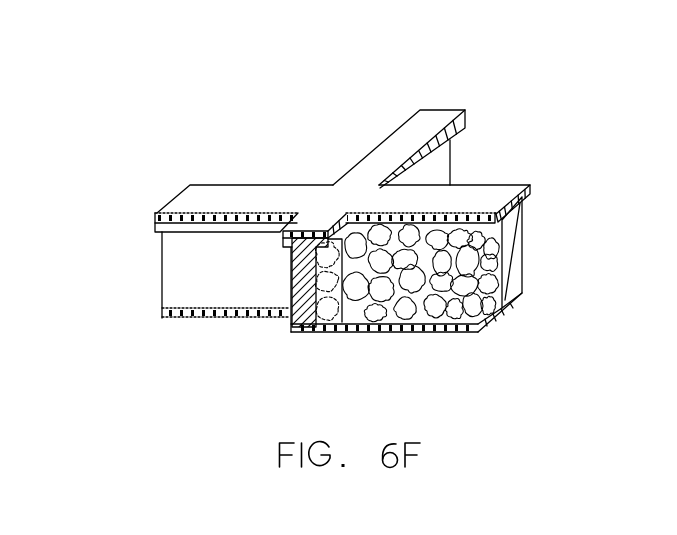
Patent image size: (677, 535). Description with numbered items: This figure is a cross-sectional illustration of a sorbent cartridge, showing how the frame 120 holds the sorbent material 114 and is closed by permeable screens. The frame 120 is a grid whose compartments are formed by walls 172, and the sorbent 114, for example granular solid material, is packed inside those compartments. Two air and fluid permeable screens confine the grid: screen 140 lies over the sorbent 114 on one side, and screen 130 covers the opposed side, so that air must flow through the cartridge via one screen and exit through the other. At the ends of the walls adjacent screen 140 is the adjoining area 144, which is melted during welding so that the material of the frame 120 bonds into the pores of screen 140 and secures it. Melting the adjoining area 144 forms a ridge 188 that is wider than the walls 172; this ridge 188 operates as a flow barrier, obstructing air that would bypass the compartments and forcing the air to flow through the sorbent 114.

The frame 120 is at (172, 212).
The screen 140 is at (156, 216).
The adjoining area 144 is at (446, 118).
The screen 130 is at (163, 311).
The sorbent material 114 is at (350, 318).
The ridge 188 is at (531, 195).
The wall 172 is at (526, 233).